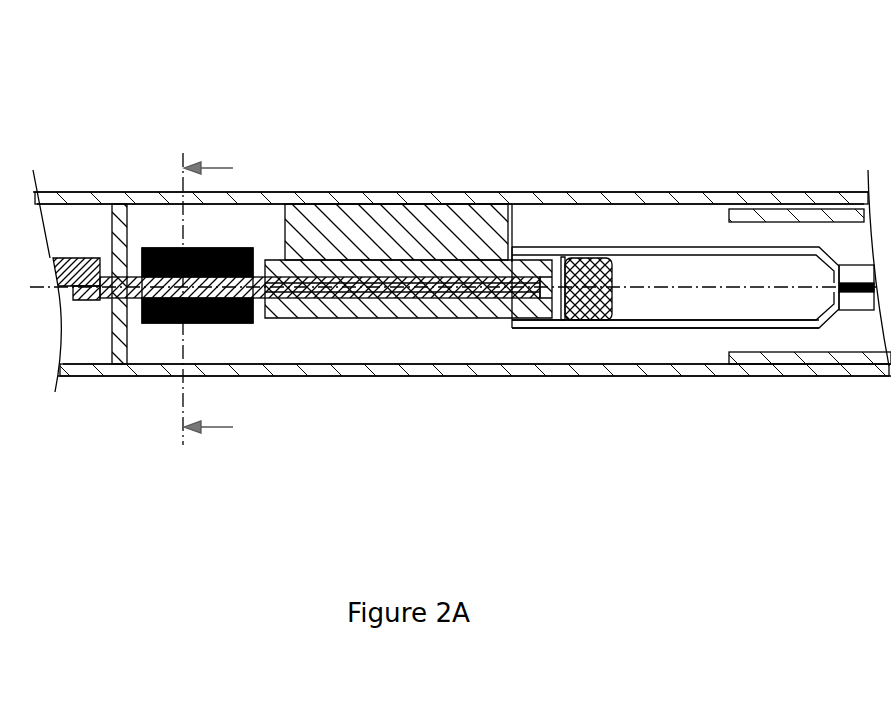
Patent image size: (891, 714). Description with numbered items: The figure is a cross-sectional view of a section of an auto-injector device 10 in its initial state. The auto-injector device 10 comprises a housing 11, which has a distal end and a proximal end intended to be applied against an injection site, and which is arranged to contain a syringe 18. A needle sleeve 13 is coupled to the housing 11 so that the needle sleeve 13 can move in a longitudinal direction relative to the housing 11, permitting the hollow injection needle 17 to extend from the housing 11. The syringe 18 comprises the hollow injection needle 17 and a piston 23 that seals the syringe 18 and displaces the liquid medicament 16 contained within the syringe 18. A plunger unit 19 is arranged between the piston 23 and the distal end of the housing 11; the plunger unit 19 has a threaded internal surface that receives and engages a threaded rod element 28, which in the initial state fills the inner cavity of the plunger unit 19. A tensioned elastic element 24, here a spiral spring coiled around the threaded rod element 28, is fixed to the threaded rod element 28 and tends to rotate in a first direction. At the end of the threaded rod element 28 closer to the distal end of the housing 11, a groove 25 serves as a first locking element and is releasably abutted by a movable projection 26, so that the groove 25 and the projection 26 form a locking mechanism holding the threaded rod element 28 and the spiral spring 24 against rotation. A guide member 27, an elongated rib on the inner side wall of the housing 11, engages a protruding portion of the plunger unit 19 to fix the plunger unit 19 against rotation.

The auto-injector device 10 is at (446, 34).
The housing 11 is at (660, 194).
The needle sleeve 13 is at (746, 355).
The liquid medicament 16 is at (635, 262).
The hollow injection needle 17 is at (864, 310).
The syringe 18 is at (803, 321).
The plunger unit 19 is at (433, 318).
The piston 23 is at (580, 290).
The elastic element 24 is at (232, 251).
The groove 25 is at (87, 286).
The movable projection 26 is at (101, 204).
The guide member 27 is at (456, 215).
The threaded rod element 28 is at (250, 295).